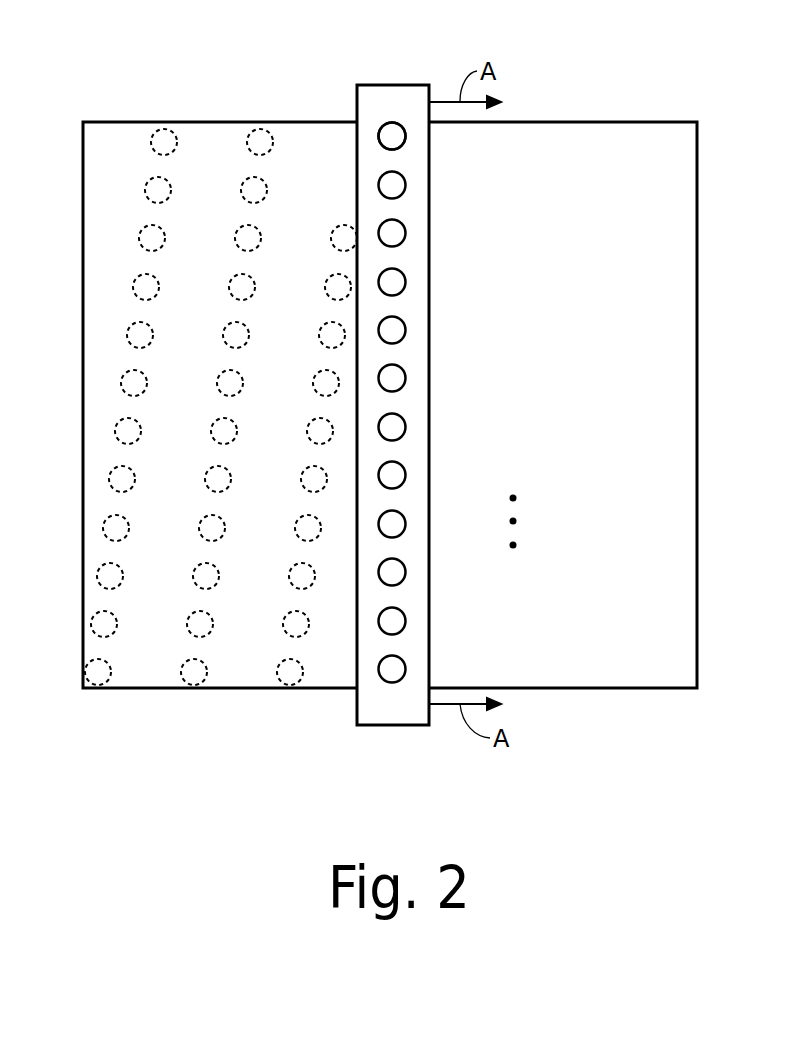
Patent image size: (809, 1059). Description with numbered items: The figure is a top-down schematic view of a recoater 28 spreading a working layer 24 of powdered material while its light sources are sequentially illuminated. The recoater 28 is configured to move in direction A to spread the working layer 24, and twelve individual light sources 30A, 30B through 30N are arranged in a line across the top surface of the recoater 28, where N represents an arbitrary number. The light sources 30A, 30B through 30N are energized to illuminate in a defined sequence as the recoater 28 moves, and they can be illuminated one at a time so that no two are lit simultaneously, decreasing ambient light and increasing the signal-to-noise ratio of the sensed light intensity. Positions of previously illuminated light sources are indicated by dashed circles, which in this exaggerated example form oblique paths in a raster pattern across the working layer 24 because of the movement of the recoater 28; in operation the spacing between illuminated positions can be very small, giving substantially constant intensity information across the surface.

The working layer 24 is at (640, 172).
The recoater 28 is at (397, 100).
The light source 30N is at (395, 136).
The light source 30B is at (395, 621).
The light source 30A is at (395, 669).